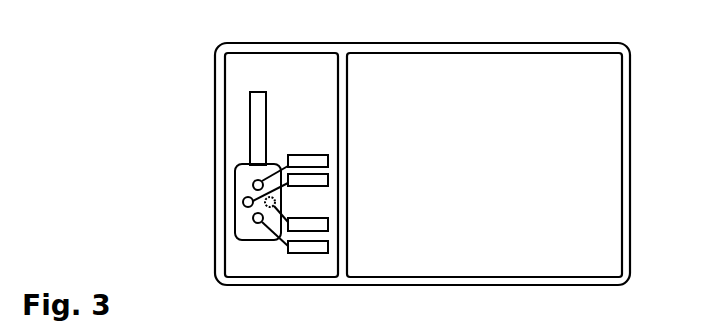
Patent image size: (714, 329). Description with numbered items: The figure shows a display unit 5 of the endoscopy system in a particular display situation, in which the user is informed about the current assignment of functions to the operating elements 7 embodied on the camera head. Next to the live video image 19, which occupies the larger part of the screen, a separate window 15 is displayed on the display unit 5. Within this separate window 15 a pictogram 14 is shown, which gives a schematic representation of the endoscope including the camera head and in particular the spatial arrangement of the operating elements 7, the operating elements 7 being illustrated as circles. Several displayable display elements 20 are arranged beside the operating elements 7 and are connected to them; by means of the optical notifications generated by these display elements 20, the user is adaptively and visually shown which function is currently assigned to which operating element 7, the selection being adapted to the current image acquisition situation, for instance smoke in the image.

The display unit 5 is at (627, 223).
The operating elements 7 is at (254, 182).
The pictogram 14 is at (250, 122).
The separate window 15 is at (235, 78).
The live video image 19 is at (593, 133).
The display elements 20 is at (308, 155).